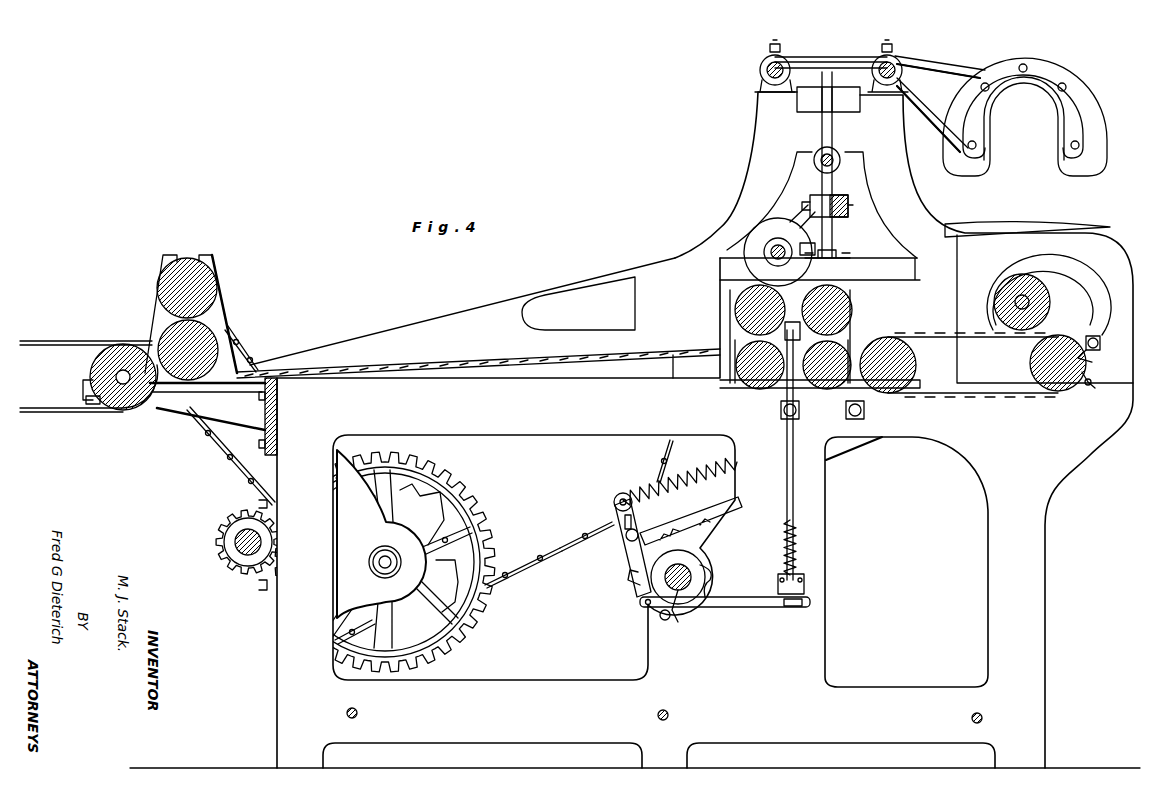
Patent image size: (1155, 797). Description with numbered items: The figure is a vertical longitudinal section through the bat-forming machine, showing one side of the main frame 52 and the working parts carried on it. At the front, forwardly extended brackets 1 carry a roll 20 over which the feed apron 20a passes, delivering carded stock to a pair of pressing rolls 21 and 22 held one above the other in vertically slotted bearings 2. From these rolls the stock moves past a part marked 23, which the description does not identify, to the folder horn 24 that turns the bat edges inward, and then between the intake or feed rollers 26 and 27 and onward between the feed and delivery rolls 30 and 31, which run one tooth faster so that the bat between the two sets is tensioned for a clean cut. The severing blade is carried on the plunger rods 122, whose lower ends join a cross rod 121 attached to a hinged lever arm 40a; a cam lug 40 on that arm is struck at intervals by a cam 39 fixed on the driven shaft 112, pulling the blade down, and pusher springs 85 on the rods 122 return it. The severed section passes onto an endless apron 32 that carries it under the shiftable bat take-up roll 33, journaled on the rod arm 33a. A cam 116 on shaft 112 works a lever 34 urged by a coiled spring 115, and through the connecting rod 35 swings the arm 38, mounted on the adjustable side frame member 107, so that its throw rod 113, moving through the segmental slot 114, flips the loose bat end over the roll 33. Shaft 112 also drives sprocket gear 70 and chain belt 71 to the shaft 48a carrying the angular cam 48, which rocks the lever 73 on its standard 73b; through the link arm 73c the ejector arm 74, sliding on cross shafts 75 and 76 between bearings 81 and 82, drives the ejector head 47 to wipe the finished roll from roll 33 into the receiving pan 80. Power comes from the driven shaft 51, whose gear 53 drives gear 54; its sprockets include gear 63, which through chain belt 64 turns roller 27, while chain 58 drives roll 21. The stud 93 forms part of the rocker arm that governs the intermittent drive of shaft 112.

The bracket 1 is at (200, 404).
The vertically slotted bearing 2 is at (152, 322).
The roll 20 is at (98, 357).
The feed apron 20a is at (58, 340).
The pressing roll 21 is at (188, 350).
The pressing roll 22 is at (187, 288).
The hopper chute 23 is at (478, 318).
The folder horn 24 is at (578, 303).
The intake or feed roller 26 is at (760, 310).
The intake or feed roller 27 is at (760, 365).
The feed and delivery roll 30 is at (827, 310).
The feed and delivery roll 31 is at (827, 365).
The endless apron 32 is at (948, 334).
The bat take-up roll 33 is at (1048, 308).
The rod arm 33a is at (1028, 298).
The lever 34 is at (606, 515).
The connecting rod 35 is at (836, 452).
The arm 38 is at (1100, 342).
The cam 39 is at (683, 576).
The cam lug 40 is at (725, 598).
The hinged lever arm 40a is at (760, 604).
The ejector head 47 is at (1040, 45).
The cam 48 is at (779, 245).
The shaft 48a is at (795, 270).
The driven shaft 51 is at (235, 542).
The main frame side 52 is at (635, 430).
The gear 53 is at (252, 541).
The gear 54 is at (501, 530).
The chain 58 is at (231, 456).
The sprocket gear 63 is at (385, 558).
The drive chain belt 64 is at (523, 565).
The sprocket gear 70 is at (630, 582).
The chain belt 71 is at (662, 466).
The rocking lever 73 is at (822, 128).
The standard 73b is at (827, 198).
The link arm 73c is at (829, 99).
The ejector arm 74 is at (940, 70).
The cross shaft 75 is at (760, 71).
The cross shaft 76 is at (894, 56).
The receiving pan 80 is at (1050, 220).
The bearing 81 is at (875, 58).
The bearing 82 is at (795, 54).
The pusher spring 85 is at (780, 547).
The stud 93 is at (814, 161).
The side frame member 107 is at (1105, 329).
The driven shaft 112 is at (690, 611).
The throw rod 113 is at (1103, 369).
The segmental slot 114 is at (990, 283).
The coiled spring 115 is at (686, 466).
The cam 116 is at (622, 566).
The cross rod 121 is at (790, 608).
The plunger rod 122 is at (787, 490).